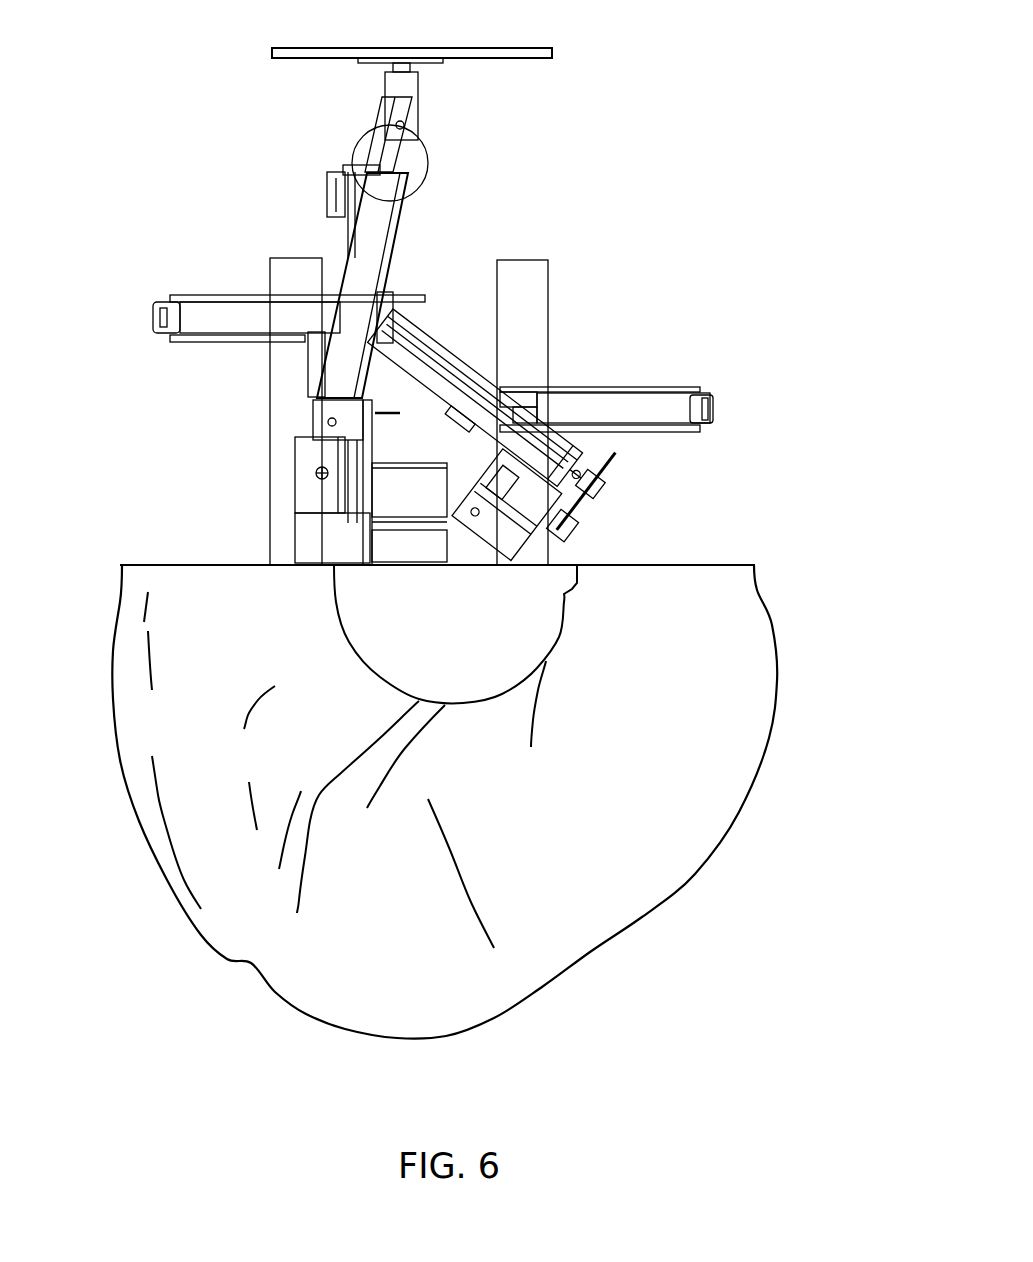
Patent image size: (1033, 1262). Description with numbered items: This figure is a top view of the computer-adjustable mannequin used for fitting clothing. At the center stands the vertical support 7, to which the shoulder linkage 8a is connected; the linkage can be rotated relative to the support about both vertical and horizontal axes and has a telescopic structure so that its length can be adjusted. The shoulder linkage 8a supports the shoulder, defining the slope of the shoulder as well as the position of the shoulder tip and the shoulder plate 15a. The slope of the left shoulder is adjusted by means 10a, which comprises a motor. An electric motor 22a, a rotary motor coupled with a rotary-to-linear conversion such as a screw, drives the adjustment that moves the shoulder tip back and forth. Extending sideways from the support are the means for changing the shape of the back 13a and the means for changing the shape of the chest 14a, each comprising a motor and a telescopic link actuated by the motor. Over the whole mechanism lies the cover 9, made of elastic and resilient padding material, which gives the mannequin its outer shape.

The shoulder plate 15a is at (555, 47).
The means for adjusting slope of left shoulder 10a is at (420, 130).
The shoulder linkage 8a is at (370, 245).
The means for changing the shape of back 13a is at (210, 310).
The means for changing the shape of chest 14a is at (658, 390).
The electric motor 22a is at (530, 503).
The vertical support 7 is at (405, 537).
The cover 9 is at (203, 845).